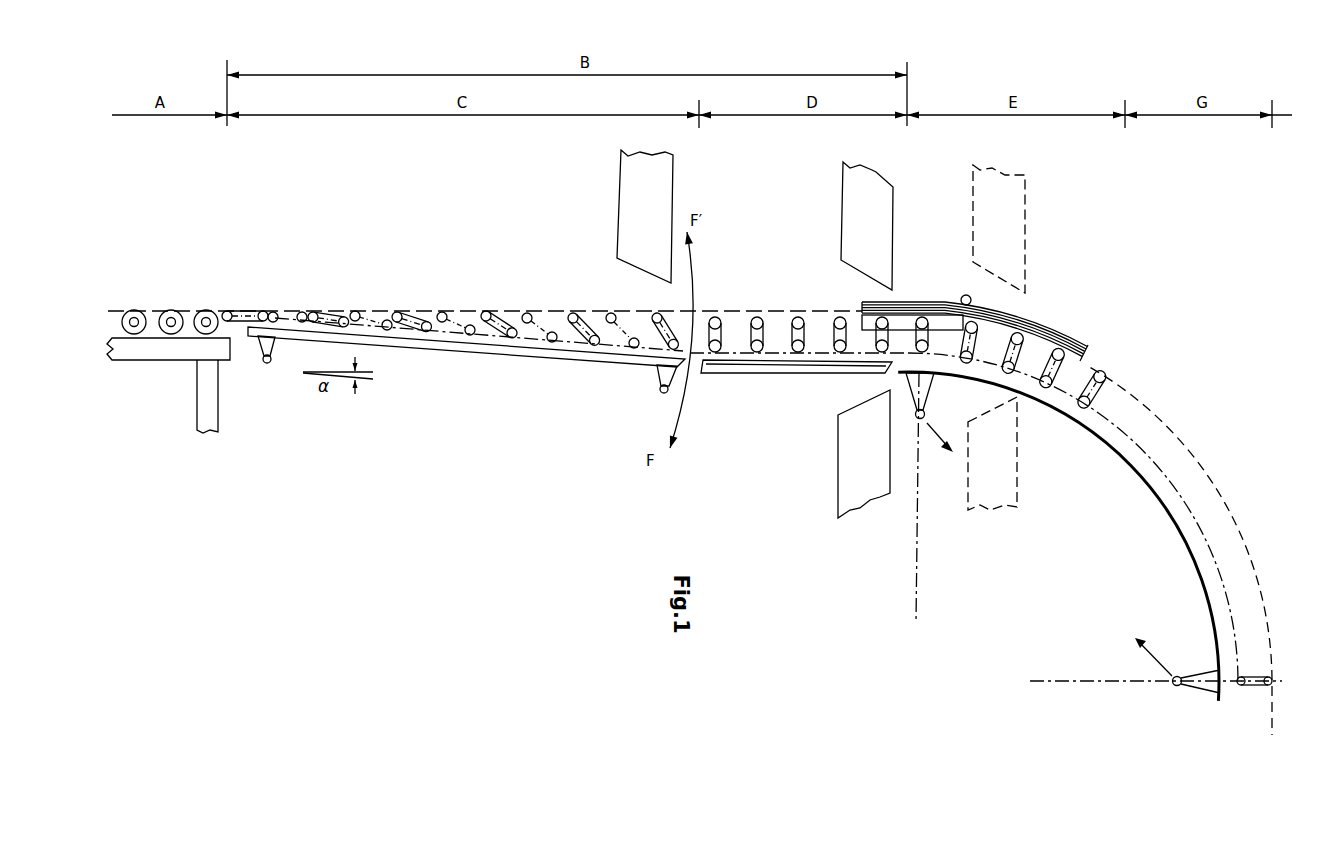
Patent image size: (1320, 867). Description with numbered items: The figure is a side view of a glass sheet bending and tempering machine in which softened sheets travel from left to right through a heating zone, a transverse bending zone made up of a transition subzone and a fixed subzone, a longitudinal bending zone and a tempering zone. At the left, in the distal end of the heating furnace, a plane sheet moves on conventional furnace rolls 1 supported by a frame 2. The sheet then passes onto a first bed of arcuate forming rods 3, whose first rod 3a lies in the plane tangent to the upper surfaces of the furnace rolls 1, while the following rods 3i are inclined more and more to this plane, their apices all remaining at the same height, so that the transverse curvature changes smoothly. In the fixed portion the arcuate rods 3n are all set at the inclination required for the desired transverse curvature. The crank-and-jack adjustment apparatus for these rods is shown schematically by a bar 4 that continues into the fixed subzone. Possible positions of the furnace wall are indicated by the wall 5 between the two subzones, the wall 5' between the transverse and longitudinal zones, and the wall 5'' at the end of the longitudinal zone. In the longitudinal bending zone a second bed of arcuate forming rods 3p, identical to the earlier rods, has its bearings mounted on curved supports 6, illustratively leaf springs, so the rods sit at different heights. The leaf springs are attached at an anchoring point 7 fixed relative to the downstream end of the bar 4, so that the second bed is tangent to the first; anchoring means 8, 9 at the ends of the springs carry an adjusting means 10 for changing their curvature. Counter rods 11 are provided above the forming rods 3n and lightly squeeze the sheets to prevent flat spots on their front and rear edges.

The furnace rolls 1 is at (134, 320).
The frame 2 is at (173, 350).
The first bed of arcuate forming rods 3 is at (581, 327).
The first rod 3a is at (243, 316).
The following rods 3i is at (497, 320).
The arcuate rods of the fixed portion 3n is at (799, 302).
The second bed of arcuate forming rods 3p is at (1061, 367).
The bar 4 is at (515, 354).
The wall 5 is at (622, 207).
The wall 5' is at (843, 325).
The wall 5'' is at (978, 321).
The curved supports 6 is at (1167, 514).
The anchoring point 7 is at (918, 426).
The anchoring means 8 is at (924, 390).
The anchoring means 9 is at (1204, 688).
The adjusting means 10 is at (1140, 650).
The counter rods 11 is at (974, 307).